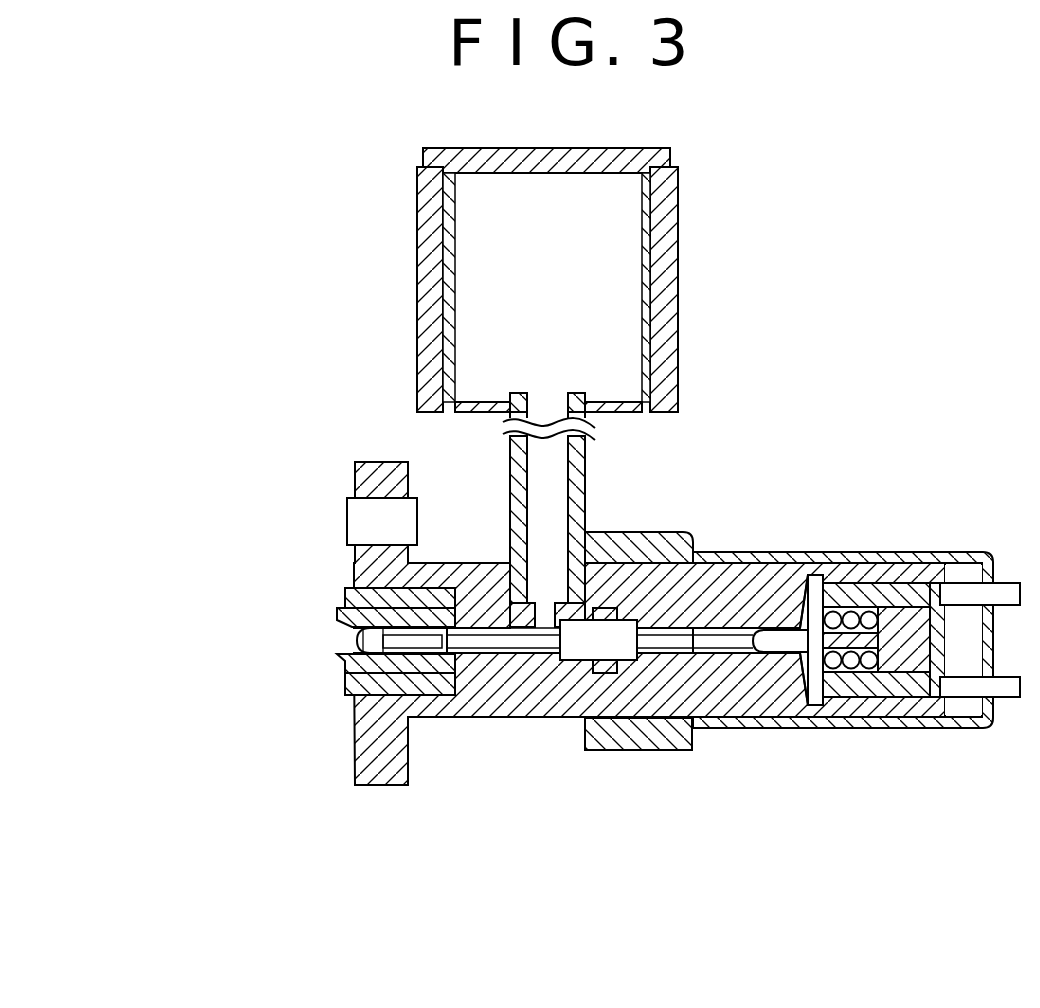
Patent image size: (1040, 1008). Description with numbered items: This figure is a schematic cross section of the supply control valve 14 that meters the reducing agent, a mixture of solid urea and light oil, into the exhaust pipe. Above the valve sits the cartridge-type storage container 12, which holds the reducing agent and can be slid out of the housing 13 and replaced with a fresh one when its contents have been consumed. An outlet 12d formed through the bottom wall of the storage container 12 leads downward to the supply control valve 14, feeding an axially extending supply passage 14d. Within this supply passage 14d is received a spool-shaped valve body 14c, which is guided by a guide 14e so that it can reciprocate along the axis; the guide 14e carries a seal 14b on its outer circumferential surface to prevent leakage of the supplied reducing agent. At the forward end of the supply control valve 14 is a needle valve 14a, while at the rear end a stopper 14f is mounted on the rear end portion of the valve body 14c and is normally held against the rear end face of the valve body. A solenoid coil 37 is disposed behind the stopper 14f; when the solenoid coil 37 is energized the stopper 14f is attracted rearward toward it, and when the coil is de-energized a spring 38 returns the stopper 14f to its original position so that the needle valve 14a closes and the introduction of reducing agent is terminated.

The storage container 12 is at (613, 227).
The outlet 12d is at (547, 408).
The housing 13 is at (678, 378).
The supply control valve 14 is at (433, 718).
The needle valve 14a is at (348, 643).
The seal 14b is at (613, 660).
The valve body 14c is at (473, 640).
The supply passage 14d is at (545, 620).
The guide 14e is at (680, 662).
The stopper 14f is at (818, 590).
The solenoid coil 37 is at (885, 590).
The spring 38 is at (857, 672).